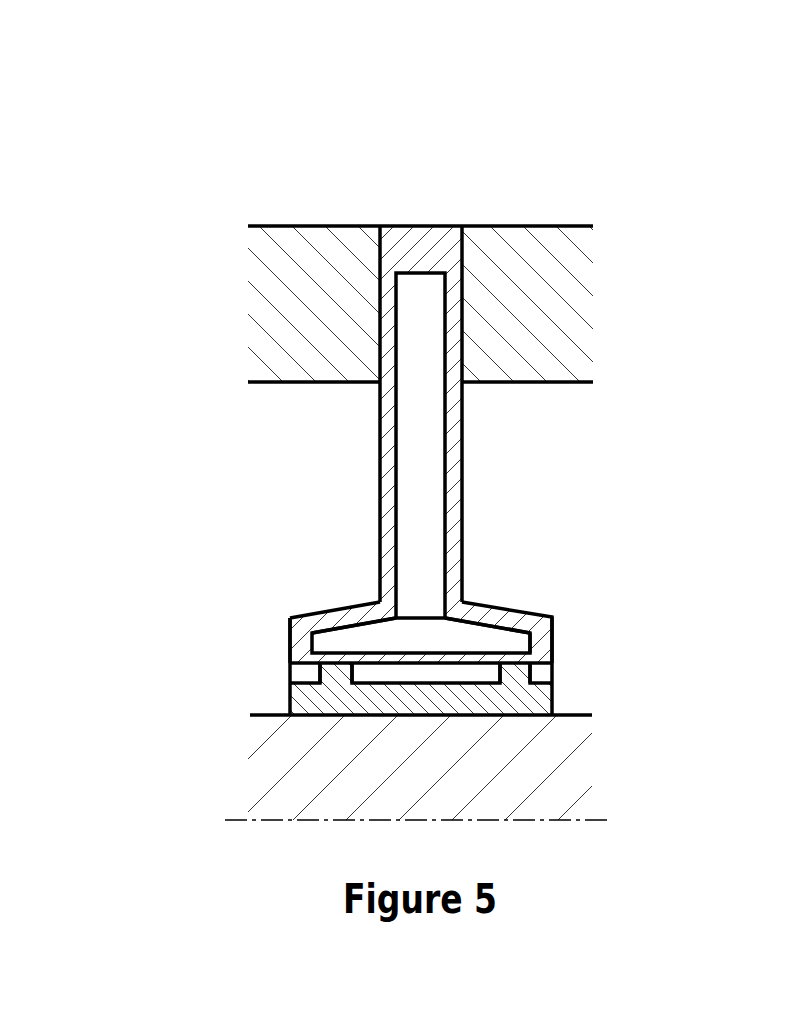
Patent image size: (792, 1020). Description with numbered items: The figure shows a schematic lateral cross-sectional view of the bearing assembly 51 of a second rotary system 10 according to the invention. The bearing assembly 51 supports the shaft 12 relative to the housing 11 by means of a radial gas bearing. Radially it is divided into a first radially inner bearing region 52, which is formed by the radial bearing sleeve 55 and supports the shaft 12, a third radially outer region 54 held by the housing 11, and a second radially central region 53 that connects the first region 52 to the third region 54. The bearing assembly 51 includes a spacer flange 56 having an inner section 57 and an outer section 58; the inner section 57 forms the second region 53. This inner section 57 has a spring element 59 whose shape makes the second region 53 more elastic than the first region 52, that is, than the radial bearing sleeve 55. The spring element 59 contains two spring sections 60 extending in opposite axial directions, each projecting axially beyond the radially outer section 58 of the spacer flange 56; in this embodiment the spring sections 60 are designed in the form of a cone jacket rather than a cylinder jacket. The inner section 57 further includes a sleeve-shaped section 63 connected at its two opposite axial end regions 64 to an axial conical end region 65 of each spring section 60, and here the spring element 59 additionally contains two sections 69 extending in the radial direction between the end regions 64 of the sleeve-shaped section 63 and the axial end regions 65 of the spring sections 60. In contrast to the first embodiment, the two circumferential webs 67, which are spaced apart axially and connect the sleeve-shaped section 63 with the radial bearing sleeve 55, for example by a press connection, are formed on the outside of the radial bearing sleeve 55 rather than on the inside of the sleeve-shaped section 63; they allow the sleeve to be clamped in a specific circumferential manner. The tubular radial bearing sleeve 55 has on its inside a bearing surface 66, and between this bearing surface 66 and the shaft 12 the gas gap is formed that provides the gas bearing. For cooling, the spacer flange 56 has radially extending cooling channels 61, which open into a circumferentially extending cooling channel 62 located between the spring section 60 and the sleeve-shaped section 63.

The device 10 is at (218, 188).
The housing 11 is at (570, 308).
The shaft 12 is at (570, 772).
The bearing assembly 51 is at (482, 496).
The first radially inner bearing region 52 is at (582, 667).
The second radially central region 53 is at (482, 533).
The third radially outer region 54 is at (480, 394).
The radial bearing sleeve 55 is at (377, 698).
The spacer flange 56 is at (362, 496).
The inner section 57 is at (360, 593).
The outer section 58 is at (364, 393).
The spring element 59 is at (273, 610).
The spring sections 60 is at (337, 617).
The cooling channels 61 is at (425, 453).
The circumferentially extending cooling channel 62 is at (512, 652).
The sleeve-shaped section 63 is at (467, 660).
The axial end regions 64 is at (527, 637).
The axial conical end region 65 is at (550, 617).
The bearing surface 66 is at (420, 716).
The webs 67 is at (333, 673).
The radially extending sections 69 is at (303, 638).